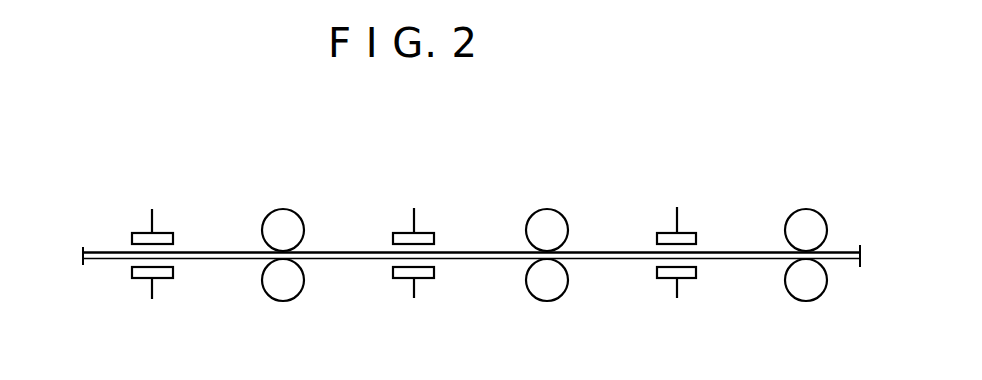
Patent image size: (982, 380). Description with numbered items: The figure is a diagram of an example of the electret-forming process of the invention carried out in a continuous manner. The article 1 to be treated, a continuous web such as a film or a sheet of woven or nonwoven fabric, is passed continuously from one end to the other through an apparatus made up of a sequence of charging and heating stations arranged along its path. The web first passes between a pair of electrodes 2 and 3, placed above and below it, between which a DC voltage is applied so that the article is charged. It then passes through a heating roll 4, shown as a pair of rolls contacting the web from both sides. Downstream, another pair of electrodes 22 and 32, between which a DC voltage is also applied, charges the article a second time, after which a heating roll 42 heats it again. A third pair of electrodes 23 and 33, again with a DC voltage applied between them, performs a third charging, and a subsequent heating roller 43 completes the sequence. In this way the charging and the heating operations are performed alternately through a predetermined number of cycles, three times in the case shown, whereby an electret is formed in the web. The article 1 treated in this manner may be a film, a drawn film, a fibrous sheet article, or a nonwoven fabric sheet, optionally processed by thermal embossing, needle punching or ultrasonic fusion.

The article 1 is at (112, 250).
The electrode 2 is at (163, 232).
The electrode 3 is at (164, 278).
The heating roll 4 is at (281, 208).
The electrode 22 is at (427, 232).
The electrode 32 is at (425, 280).
The heating roll 42 is at (553, 208).
The electrode 23 is at (688, 231).
The electrode 33 is at (685, 278).
The heating roller 43 is at (816, 206).